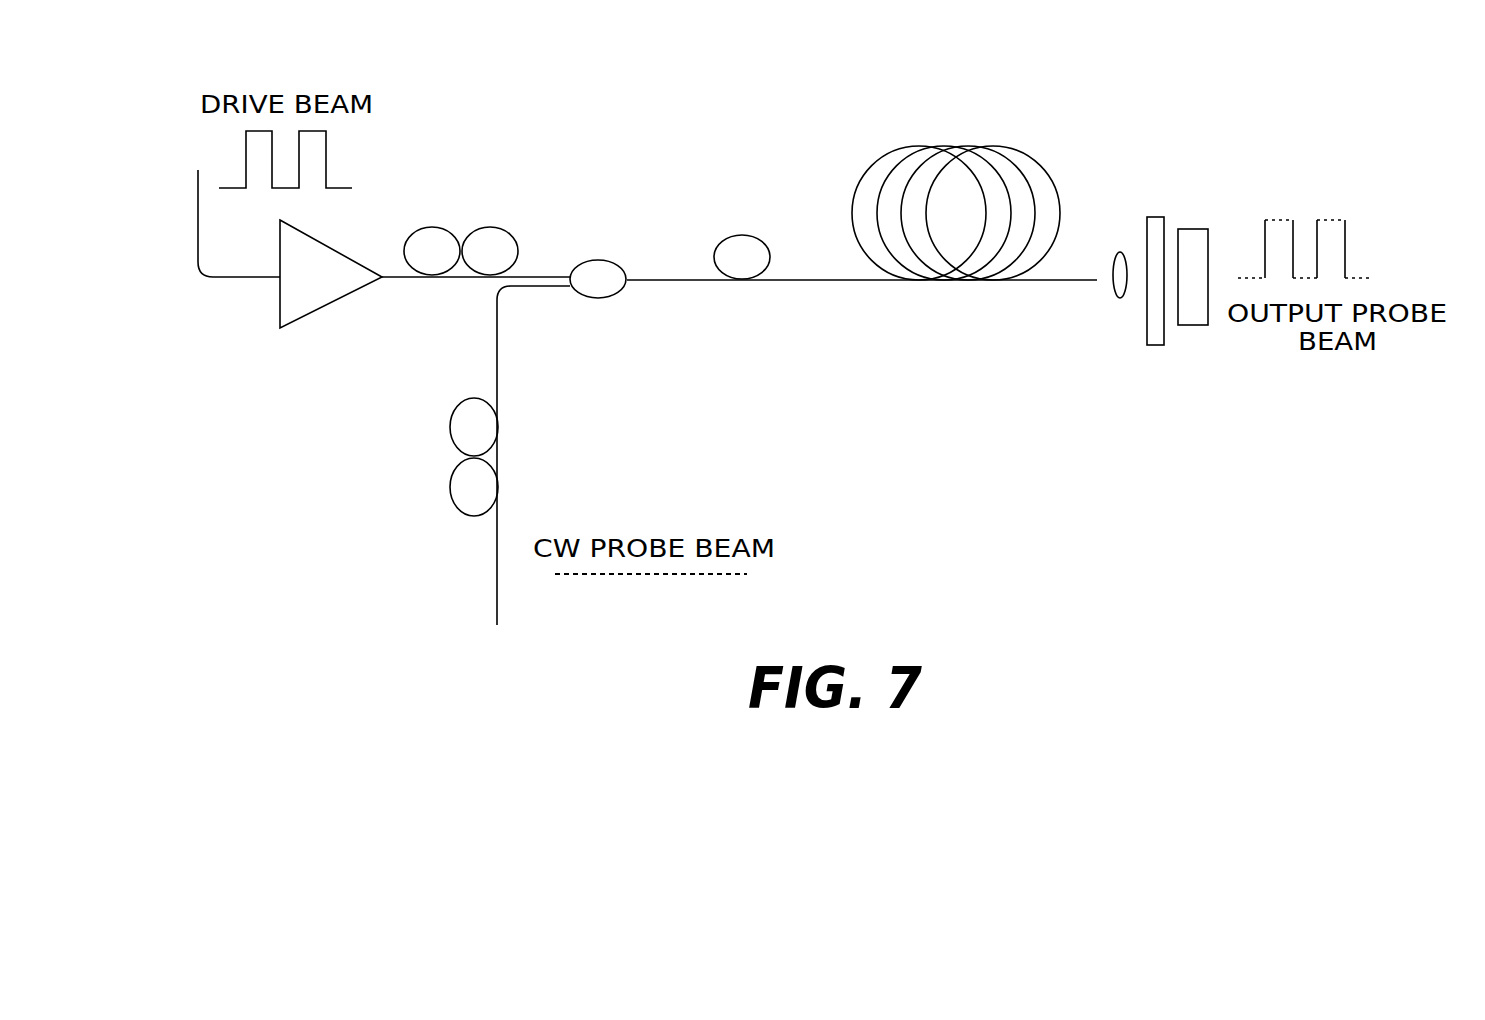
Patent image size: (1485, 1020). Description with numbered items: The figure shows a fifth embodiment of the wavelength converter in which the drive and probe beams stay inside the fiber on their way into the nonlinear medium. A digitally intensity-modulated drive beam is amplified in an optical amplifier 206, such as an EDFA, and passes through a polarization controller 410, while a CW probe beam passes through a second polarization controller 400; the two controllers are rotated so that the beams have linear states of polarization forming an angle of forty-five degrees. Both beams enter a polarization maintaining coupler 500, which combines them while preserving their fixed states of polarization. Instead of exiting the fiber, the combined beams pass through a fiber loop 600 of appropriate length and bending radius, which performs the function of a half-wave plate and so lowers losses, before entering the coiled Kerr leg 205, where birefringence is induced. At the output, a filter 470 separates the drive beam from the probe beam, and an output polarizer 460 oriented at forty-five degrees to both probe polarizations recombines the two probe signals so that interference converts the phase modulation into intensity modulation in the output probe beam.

The optical amplifier 206 is at (329, 305).
The polarization controller 410 is at (462, 245).
The polarization maintaining coupler 500 is at (598, 260).
The fiber loop 600 is at (742, 235).
The Kerr leg 205 is at (958, 146).
The output polarizer 460 is at (1193, 229).
The filter 470 is at (1155, 345).
The polarization controller 400 is at (470, 457).